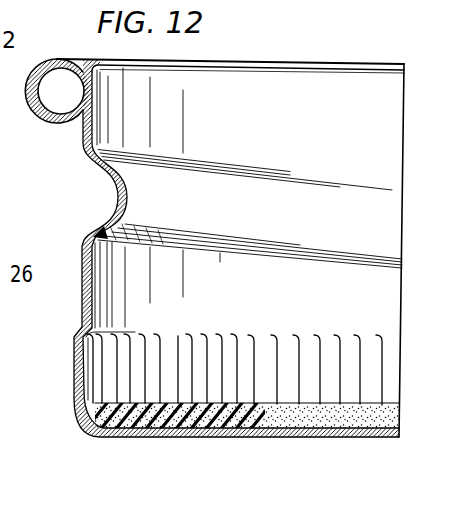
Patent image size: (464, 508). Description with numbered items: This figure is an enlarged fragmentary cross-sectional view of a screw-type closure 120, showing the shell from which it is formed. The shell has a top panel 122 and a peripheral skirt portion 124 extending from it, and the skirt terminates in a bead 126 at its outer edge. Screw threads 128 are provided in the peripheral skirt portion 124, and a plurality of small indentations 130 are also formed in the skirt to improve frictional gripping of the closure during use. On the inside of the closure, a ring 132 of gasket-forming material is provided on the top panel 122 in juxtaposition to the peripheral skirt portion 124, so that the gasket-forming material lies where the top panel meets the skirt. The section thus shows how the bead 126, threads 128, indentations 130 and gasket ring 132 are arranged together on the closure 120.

The screw-type closure 120 is at (68, 226).
The top panel 122 is at (329, 437).
The peripheral skirt portion 124 is at (80, 298).
The bead 126 is at (53, 127).
The screw threads 128 is at (128, 197).
The indentations 130 is at (108, 377).
The ring of gasket-forming material 132 is at (178, 336).